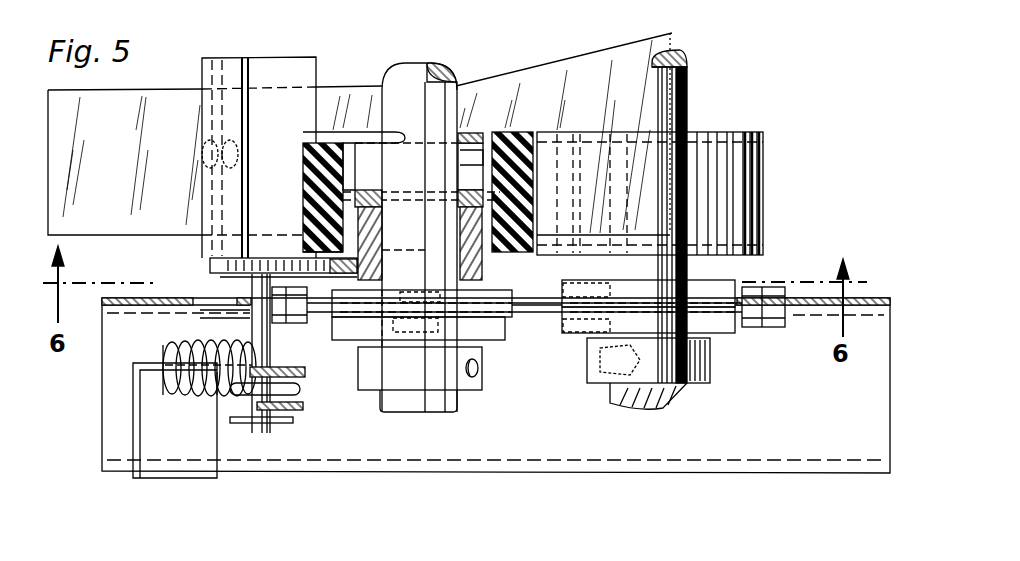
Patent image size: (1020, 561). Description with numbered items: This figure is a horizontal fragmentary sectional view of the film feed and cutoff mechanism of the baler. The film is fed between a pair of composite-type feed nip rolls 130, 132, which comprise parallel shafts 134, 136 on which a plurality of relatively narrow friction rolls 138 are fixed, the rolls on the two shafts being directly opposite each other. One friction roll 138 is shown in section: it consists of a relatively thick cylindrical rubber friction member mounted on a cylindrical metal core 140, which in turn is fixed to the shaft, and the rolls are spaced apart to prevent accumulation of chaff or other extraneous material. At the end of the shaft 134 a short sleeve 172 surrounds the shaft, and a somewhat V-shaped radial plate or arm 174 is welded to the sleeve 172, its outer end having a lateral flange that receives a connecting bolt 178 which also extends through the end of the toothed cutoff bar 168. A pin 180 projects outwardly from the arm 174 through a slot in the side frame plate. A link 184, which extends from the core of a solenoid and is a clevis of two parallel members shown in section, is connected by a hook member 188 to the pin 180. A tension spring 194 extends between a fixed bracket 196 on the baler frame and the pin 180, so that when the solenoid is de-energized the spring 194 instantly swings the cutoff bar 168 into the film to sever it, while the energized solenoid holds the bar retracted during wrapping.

The feed nip roll 130 is at (358, 98).
The feed nip roll 132 is at (731, 120).
The shaft 134 is at (418, 65).
The shaft 136 is at (688, 77).
The friction roll 138 is at (303, 167).
The cylindrical metal core 140 is at (470, 163).
The cutoff bar 168 is at (274, 70).
The sleeve 172 is at (482, 270).
The radial plate or arm 174 is at (233, 283).
The connecting bolt 178 is at (360, 134).
The pin 180 is at (247, 328).
The link 184 is at (296, 367).
The hook member 188 is at (302, 389).
The tension spring 194 is at (200, 390).
The fixed bracket 196 is at (133, 410).